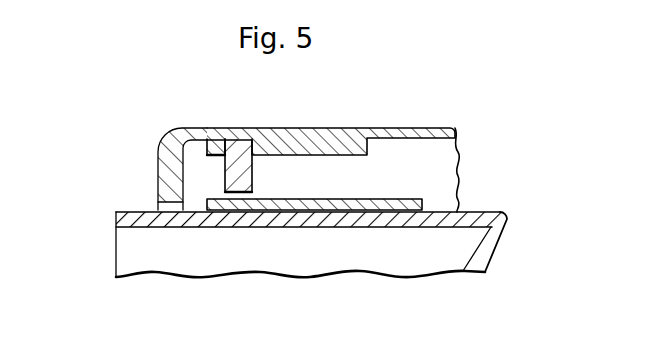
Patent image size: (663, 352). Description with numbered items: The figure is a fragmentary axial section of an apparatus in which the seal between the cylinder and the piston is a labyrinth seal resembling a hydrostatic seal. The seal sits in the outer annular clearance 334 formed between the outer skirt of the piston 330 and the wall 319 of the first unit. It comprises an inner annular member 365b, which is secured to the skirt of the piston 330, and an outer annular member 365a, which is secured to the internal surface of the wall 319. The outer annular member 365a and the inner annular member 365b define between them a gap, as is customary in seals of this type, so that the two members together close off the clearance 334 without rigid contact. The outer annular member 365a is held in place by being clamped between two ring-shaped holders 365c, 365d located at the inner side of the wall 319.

The wall 319 is at (151, 173).
The piston 330 is at (508, 243).
The outer annular clearance 334 is at (427, 172).
The outer annular member 365a is at (238, 147).
The inner annular member 365b is at (307, 206).
The ring-shaped holder 365c is at (215, 142).
The ring-shaped holder 365d is at (347, 135).